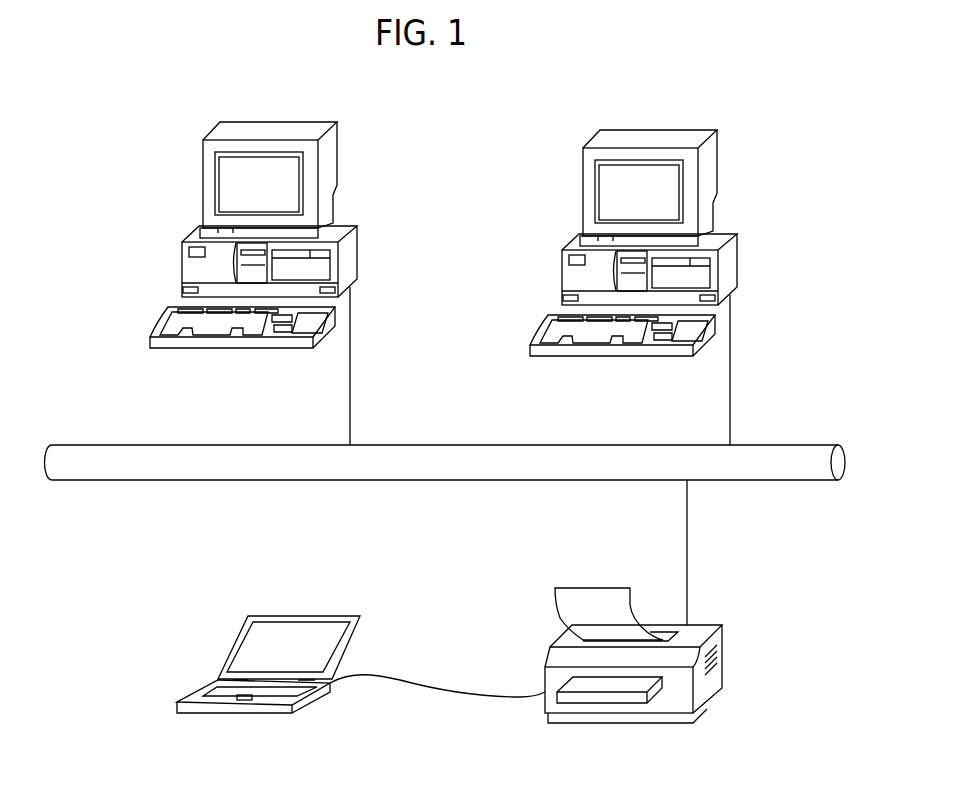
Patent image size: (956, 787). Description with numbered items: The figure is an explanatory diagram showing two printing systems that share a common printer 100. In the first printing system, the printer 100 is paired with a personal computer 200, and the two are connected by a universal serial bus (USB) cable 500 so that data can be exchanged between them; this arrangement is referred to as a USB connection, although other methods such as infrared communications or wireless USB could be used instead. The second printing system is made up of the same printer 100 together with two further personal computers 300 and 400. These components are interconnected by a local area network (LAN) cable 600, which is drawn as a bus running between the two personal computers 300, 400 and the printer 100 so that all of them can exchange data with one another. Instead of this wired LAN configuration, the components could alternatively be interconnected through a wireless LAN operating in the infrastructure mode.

The printer 100 is at (697, 623).
The personal computer 200 is at (227, 712).
The personal computer 300 is at (268, 122).
The personal computer 400 is at (643, 130).
The universal serial bus (USB) cable 500 is at (437, 687).
The local area network (LAN) cable 600 is at (585, 481).